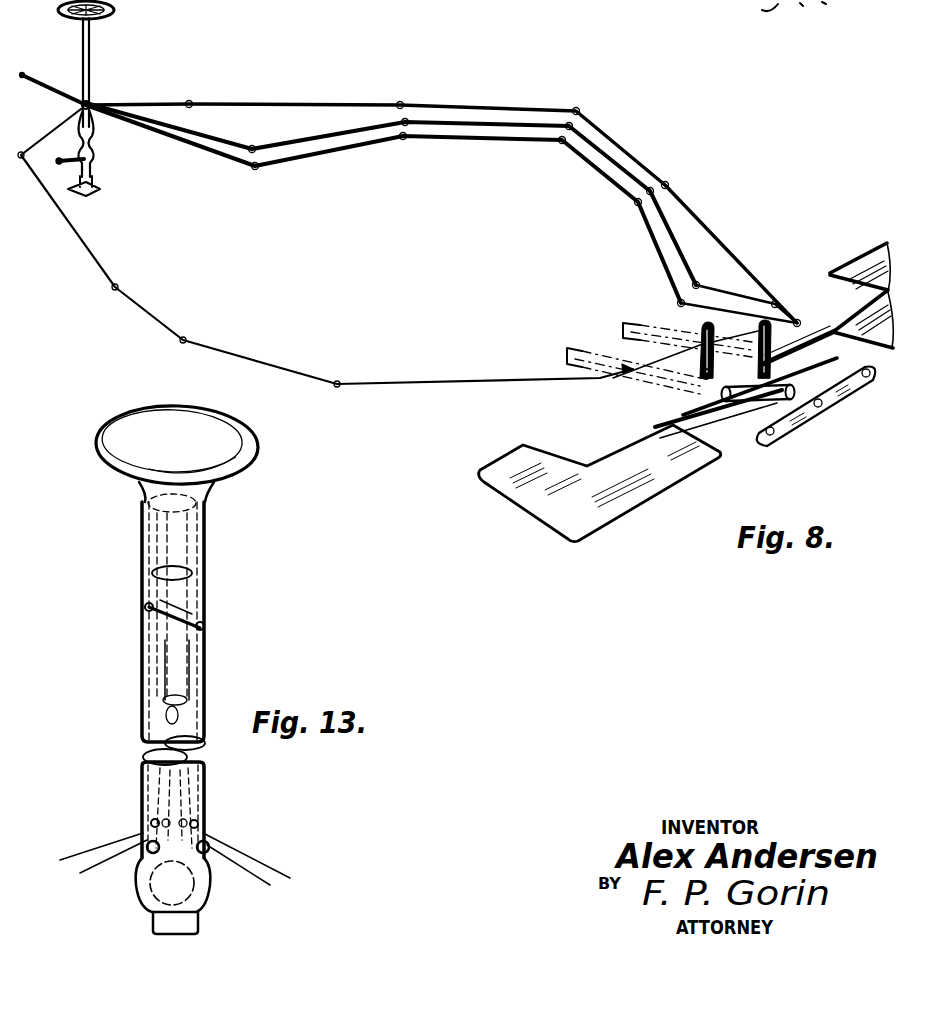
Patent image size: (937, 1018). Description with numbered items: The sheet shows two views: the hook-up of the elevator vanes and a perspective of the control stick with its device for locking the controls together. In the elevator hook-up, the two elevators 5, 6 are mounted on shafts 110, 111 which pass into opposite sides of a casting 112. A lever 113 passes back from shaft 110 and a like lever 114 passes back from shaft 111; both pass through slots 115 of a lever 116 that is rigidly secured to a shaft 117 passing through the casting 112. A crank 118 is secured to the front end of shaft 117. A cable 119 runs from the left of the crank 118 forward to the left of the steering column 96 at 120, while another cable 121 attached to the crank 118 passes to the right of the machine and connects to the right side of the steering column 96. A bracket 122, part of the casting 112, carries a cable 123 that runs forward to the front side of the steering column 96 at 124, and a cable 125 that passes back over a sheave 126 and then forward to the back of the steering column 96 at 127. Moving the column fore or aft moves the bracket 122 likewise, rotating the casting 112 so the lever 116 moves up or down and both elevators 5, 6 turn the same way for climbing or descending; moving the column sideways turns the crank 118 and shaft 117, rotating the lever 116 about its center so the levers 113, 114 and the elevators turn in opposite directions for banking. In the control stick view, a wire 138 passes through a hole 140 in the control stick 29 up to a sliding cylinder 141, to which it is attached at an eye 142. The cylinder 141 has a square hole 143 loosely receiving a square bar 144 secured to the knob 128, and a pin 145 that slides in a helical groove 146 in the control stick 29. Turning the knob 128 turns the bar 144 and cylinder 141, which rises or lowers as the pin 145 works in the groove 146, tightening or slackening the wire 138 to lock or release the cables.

In FIG. 8, the elevator 5 is at (586, 537).
In FIG. 8, the elevator 6 is at (858, 263).
In FIG. 13, the control stick 29 is at (141, 547).
In FIG. 8, the steering column 96 is at (92, 38).
In FIG. 8, the shaft 110 is at (720, 428).
In FIG. 8, the shaft 111 is at (818, 355).
In FIG. 8, the casting 112 is at (741, 420).
In FIG. 8, the lever 113 is at (770, 428).
In FIG. 8, the lever 114 is at (795, 322).
In FIG. 8, the slot 115 is at (776, 436).
In FIG. 8, the lever 116 is at (824, 405).
In FIG. 8, the shaft 117 is at (686, 402).
In FIG. 8, the crank 118 is at (650, 347).
In FIG. 8, the cable 119 is at (88, 250).
In FIG. 8, the attachment point 120 is at (82, 108).
In FIG. 8, the cable 121 is at (208, 100).
In FIG. 8, the bracket 122 is at (678, 311).
In FIG. 8, the cable 123 is at (186, 145).
In FIG. 8, the attachment point 124 is at (82, 94).
In FIG. 8, the cable 125 is at (200, 132).
In FIG. 8, the sheave 126 is at (794, 298).
In FIG. 8, the attachment point 127 is at (93, 97).
In FIG. 13, the knob 128 is at (260, 452).
In FIG. 13, the wire 138 is at (107, 862).
In FIG. 13, the hole 140 is at (152, 822).
In FIG. 13, the sliding cylinder 141 is at (157, 673).
In FIG. 13, the eye 142 is at (170, 718).
In FIG. 13, the square hole 143 is at (170, 574).
In FIG. 13, the square bar 144 is at (183, 546).
In FIG. 13, the pin 145 is at (205, 628).
In FIG. 13, the helical groove 146 is at (204, 612).